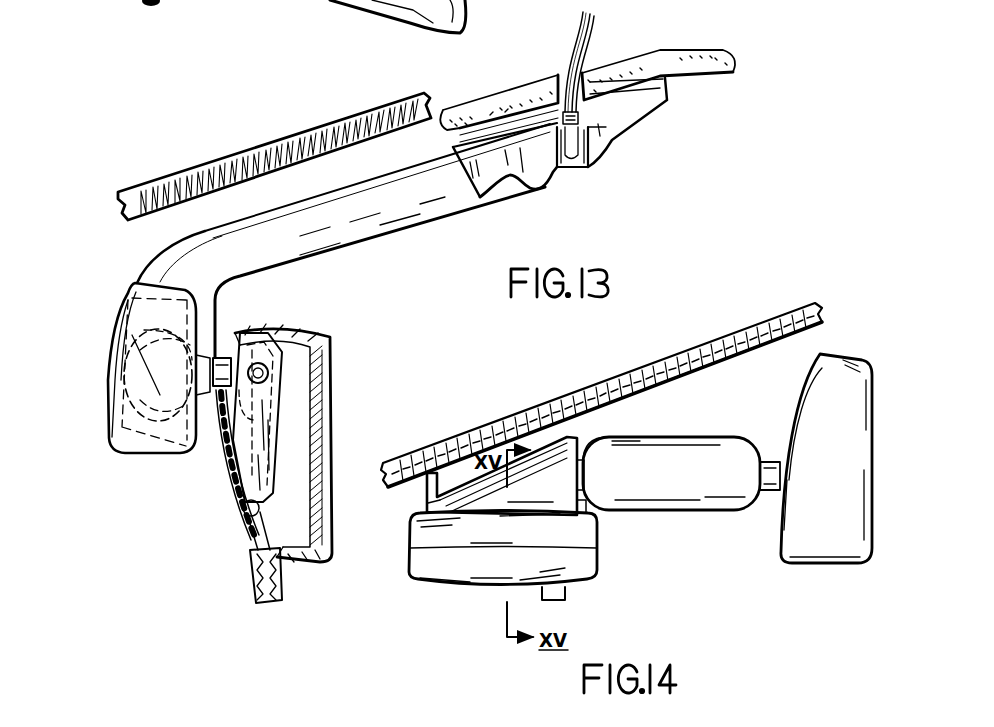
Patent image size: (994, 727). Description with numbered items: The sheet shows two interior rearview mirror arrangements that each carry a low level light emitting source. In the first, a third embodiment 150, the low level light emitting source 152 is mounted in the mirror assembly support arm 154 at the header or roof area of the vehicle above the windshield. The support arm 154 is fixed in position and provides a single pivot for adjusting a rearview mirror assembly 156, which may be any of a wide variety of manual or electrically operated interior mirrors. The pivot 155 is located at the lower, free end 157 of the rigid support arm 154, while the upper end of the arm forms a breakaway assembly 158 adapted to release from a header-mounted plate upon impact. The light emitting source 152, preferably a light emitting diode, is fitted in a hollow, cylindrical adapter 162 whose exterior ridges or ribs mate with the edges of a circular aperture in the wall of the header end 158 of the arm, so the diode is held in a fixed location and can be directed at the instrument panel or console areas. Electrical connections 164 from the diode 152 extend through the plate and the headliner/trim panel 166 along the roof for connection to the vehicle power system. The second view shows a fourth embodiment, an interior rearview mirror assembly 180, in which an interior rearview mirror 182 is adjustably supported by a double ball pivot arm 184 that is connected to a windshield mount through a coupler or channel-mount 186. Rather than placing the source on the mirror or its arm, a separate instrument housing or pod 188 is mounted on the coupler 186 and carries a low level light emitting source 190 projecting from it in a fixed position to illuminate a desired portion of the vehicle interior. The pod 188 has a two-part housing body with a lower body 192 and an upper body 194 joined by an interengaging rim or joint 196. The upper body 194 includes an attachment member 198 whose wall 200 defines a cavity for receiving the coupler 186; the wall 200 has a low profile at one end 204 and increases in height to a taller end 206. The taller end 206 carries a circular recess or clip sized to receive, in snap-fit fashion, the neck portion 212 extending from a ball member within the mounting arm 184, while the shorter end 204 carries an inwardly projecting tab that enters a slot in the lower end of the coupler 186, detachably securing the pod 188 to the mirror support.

In FIG. 13, the third embodiment 150 is at (388, 307).
In FIG. 13, the low level light emitting source 152 is at (577, 166).
In FIG. 13, the mirror assembly support arm 154 is at (390, 238).
In FIG. 13, the pivot 155 is at (162, 378).
In FIG. 13, the rearview mirror assembly 156 is at (308, 582).
In FIG. 13, the lower, free end 157 is at (110, 357).
In FIG. 13, the breakaway assembly 158 is at (617, 127).
In FIG. 13, the hollow, cylindrical adapter 162 is at (592, 132).
In FIG. 13, the electrical connections 164 is at (566, 60).
In FIG. 13, the headliner/trim panel 166 is at (677, 57).
In FIG. 14, the interior rearview mirror assembly 180 is at (734, 574).
In FIG. 14, the interior rearview mirror 182 is at (860, 398).
In FIG. 14, the double ball pivot arm 184 is at (712, 452).
In FIG. 14, the coupler or channel-mount 186 is at (584, 438).
In FIG. 14, the instrument housing or pod 188 is at (415, 584).
In FIG. 14, the low level light emitting source 190 is at (567, 595).
In FIG. 14, the lower body 192 is at (492, 568).
In FIG. 14, the upper body 194 is at (488, 529).
In FIG. 14, the interengaging rim or joint 196 is at (597, 548).
In FIG. 14, the attachment member 198 is at (461, 478).
In FIG. 14, the wall 200 is at (515, 470).
In FIG. 14, the low profile end 204 is at (426, 509).
In FIG. 14, the taller end 206 is at (592, 506).
In FIG. 14, the neck portion 212 is at (582, 455).